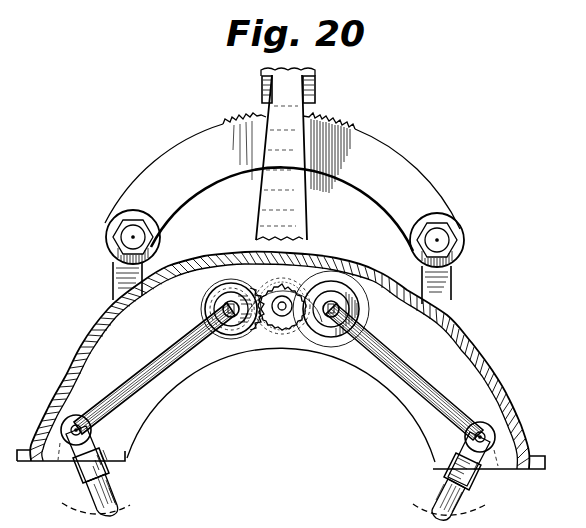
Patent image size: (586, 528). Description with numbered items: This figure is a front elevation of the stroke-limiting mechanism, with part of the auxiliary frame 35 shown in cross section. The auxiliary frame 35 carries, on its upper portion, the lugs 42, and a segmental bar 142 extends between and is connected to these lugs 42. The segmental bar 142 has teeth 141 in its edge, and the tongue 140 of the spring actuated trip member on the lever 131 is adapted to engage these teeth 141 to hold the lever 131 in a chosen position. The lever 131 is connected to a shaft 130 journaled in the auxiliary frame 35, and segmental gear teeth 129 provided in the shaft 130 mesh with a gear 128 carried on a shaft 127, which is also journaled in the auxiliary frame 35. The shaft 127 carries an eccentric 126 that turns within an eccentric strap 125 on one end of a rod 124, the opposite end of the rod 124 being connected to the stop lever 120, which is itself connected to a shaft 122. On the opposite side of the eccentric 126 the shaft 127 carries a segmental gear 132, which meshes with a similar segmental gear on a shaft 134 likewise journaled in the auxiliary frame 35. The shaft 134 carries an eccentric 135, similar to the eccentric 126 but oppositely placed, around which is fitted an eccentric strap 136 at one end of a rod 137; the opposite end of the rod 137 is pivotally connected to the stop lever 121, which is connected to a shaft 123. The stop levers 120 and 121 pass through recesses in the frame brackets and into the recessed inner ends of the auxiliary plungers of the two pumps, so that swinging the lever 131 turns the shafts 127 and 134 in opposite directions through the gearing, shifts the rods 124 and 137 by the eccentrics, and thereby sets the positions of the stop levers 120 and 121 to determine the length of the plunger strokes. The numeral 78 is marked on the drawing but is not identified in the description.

The auxiliary frame member 35 is at (104, 325).
The lug 42 is at (120, 280).
The base plate 78 is at (300, 515).
The stop lever 120 is at (116, 492).
The stop lever 121 is at (440, 491).
The shaft 122 is at (112, 459).
The shaft 123 is at (442, 463).
The rod 124 is at (140, 374).
The eccentric strap 125 is at (206, 306).
The eccentric 126 is at (240, 284).
The shaft 127 is at (233, 320).
The gear 128 is at (214, 294).
The segmental gear teeth 129 is at (308, 270).
The shaft 130 is at (289, 330).
The lever 131 is at (303, 216).
The segmental gear 132 is at (263, 338).
The shaft 134 is at (330, 318).
The eccentric 135 is at (348, 282).
The eccentric strap 136 is at (352, 312).
The rod 137 is at (434, 386).
The tongue 140 is at (300, 110).
The teeth 141 is at (248, 117).
The segmental bar 142 is at (189, 144).